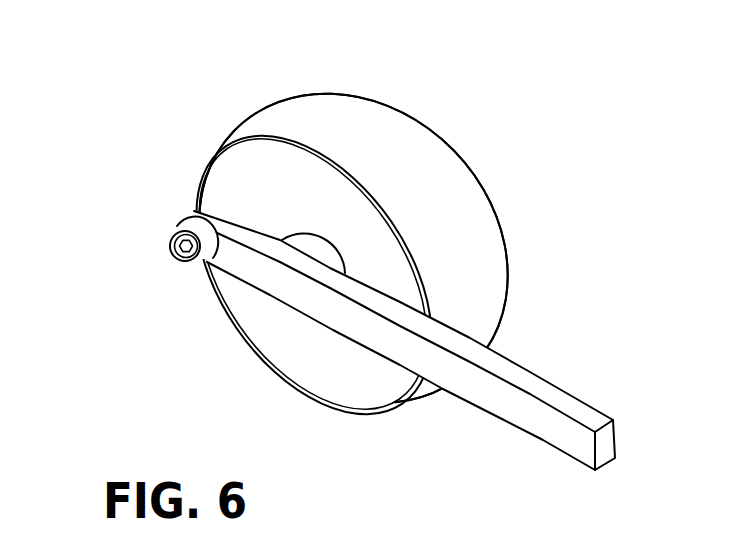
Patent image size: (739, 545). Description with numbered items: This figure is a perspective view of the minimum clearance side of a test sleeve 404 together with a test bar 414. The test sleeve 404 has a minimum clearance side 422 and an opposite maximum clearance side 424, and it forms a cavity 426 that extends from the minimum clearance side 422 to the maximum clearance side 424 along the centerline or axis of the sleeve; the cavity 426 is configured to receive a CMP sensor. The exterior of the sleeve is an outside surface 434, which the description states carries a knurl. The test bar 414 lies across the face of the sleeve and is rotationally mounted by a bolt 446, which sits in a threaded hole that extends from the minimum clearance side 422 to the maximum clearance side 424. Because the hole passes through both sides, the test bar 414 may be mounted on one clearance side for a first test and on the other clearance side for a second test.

The test sleeve 404 is at (262, 27).
The test bar 414 is at (503, 403).
The minimum clearance side 422 is at (240, 170).
The maximum clearance side 424 is at (492, 214).
The cavity 426 is at (312, 243).
The outside surface 434 is at (440, 177).
The bolt 446 is at (195, 268).